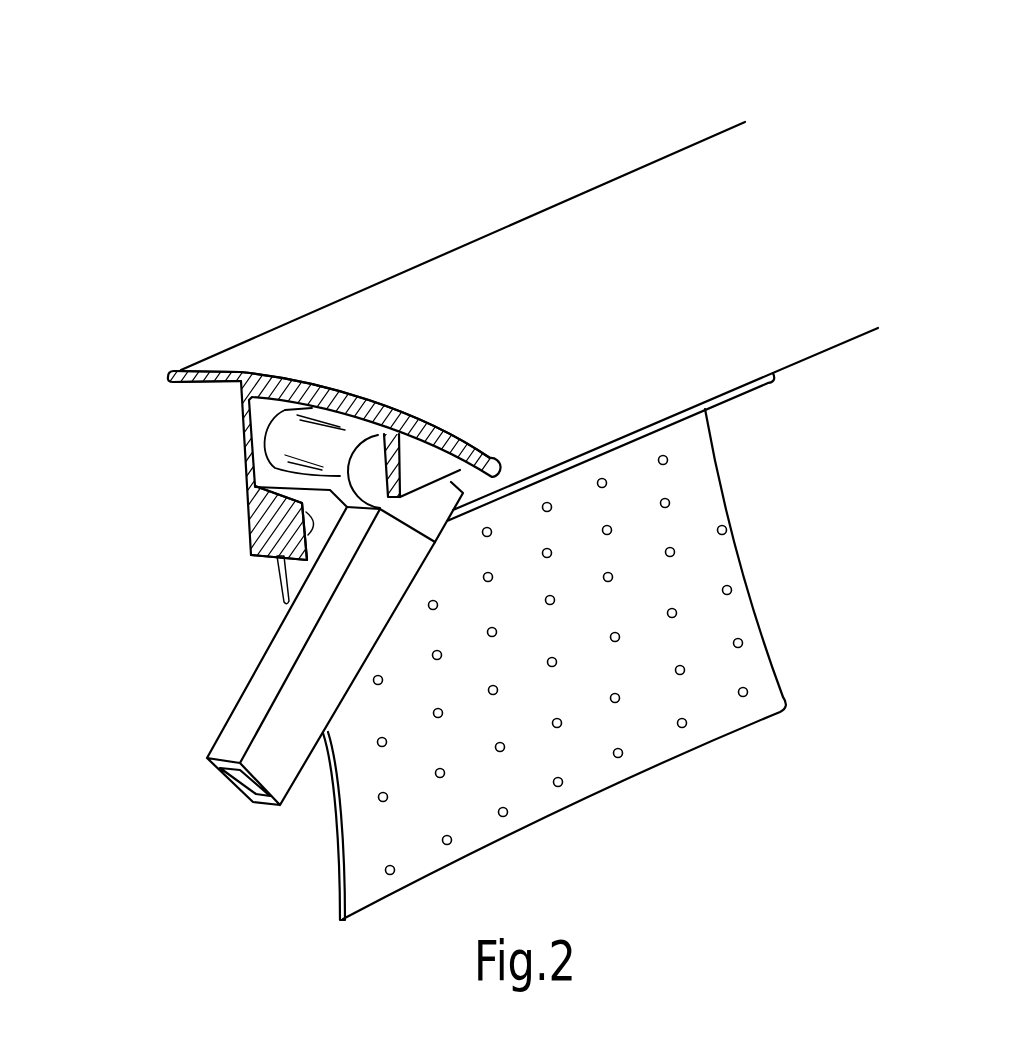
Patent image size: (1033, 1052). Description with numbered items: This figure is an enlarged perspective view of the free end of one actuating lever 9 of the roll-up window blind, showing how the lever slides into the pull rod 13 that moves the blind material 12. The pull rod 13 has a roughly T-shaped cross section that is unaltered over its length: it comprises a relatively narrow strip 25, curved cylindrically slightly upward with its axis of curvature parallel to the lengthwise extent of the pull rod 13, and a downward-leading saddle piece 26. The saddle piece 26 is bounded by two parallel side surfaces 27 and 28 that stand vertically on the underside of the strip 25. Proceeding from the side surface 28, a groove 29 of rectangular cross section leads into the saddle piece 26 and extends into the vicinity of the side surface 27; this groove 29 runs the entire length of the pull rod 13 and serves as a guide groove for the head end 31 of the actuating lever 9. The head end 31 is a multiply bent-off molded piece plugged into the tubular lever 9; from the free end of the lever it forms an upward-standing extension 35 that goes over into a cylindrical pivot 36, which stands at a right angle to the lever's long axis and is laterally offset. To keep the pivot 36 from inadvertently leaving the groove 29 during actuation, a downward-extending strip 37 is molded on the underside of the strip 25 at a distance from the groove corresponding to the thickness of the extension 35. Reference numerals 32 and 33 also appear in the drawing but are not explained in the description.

The actuating lever 9 is at (242, 727).
The blind material 12 is at (738, 553).
The pull rod 13 is at (499, 175).
The strip 25 is at (182, 370).
The saddle piece 26 is at (228, 480).
The side surface 27 is at (247, 530).
The side surface 28 is at (273, 564).
The groove 29 is at (260, 408).
The head end 31 is at (441, 503).
The tube end face 32 is at (306, 580).
The pin 33 is at (277, 588).
The extension 35 is at (370, 462).
The cylindrical pivot 36 is at (315, 400).
The downward-extending strip 37 is at (412, 470).